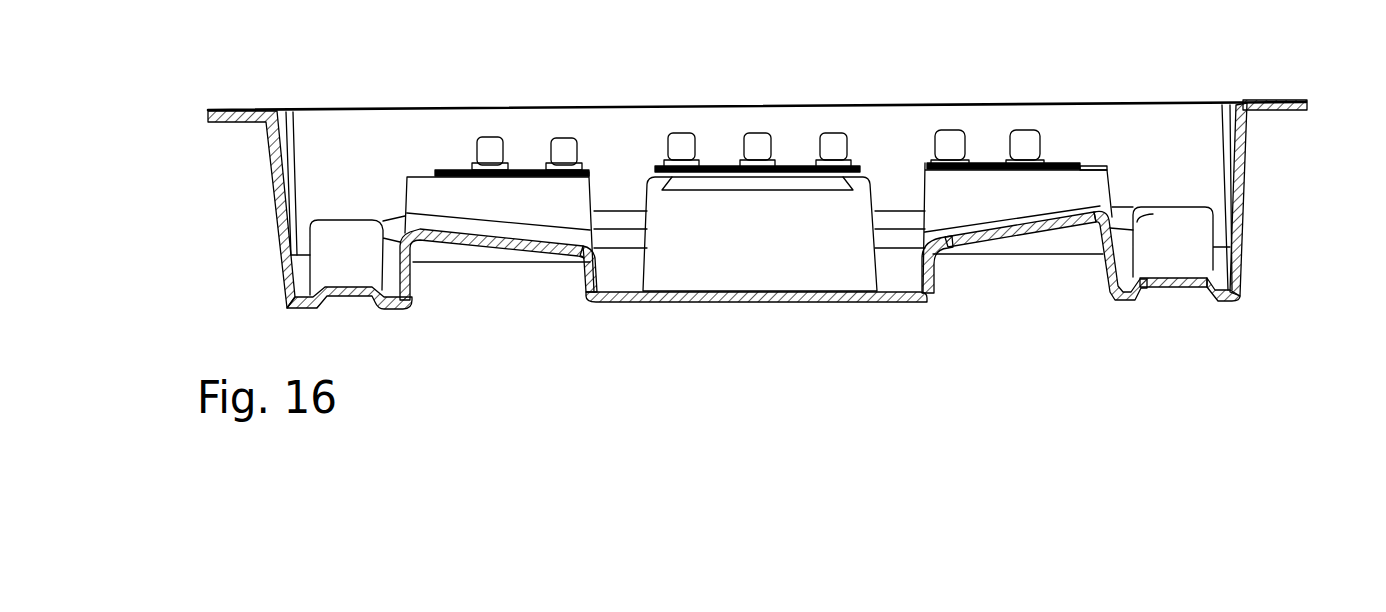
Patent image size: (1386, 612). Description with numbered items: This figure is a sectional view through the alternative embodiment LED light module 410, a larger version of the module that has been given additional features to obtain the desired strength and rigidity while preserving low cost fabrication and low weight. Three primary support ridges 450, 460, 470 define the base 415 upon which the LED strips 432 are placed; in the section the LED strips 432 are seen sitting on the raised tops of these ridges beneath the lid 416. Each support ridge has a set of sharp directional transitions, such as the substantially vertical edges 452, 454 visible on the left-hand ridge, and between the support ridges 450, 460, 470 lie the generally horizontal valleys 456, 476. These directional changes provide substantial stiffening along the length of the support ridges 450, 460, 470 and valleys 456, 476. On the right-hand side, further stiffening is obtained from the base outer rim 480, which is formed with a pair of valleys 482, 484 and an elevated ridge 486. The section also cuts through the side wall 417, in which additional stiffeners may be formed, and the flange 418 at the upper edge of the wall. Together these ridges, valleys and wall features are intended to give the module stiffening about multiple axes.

The battery tray assembly 410 is at (804, 74).
The base 415 is at (420, 180).
The lid 416 is at (1152, 113).
The side wall 417 is at (1243, 193).
The flange 418 is at (1273, 100).
The LED strips 432 is at (553, 150).
The primary support ridge 450 is at (501, 258).
The substantially vertical edge 452 is at (408, 305).
The substantially vertical edge 454 is at (588, 294).
The generally horizontal valley 456 is at (633, 304).
The primary support ridge 460 is at (762, 270).
The primary support ridge 470 is at (1018, 254).
The generally horizontal valley 476 is at (898, 276).
The base outer rim 480 is at (1159, 302).
The valley 482 is at (1115, 298).
The valley 484 is at (1227, 298).
The elevated ridge 486 is at (1177, 303).